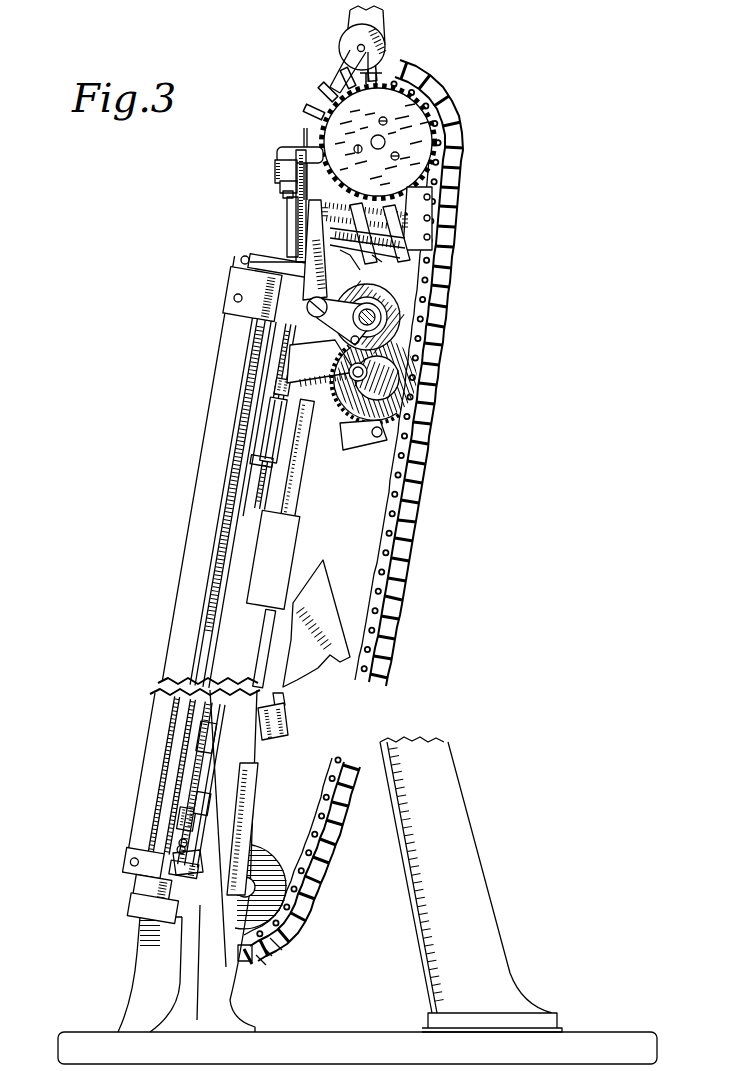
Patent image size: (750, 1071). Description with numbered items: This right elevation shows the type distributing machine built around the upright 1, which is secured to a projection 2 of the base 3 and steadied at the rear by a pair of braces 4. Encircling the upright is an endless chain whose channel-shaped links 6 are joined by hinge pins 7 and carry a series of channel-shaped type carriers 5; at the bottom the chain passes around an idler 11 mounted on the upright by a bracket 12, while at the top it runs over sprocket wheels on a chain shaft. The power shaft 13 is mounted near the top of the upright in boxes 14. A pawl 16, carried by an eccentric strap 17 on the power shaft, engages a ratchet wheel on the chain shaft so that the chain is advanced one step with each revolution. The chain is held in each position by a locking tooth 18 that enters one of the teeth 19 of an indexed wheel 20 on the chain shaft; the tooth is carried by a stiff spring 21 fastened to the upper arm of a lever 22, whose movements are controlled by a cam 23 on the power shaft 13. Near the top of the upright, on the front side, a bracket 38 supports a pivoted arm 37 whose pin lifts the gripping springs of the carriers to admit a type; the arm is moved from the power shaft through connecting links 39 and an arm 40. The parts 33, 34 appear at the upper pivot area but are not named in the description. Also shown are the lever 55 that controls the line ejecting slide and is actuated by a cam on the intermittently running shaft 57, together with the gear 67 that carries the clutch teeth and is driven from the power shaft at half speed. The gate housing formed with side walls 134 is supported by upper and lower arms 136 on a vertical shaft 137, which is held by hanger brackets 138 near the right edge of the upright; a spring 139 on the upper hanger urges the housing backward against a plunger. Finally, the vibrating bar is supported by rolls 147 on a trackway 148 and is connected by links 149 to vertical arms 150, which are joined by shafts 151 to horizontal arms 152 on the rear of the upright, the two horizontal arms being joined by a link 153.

The upright 1 is at (235, 762).
The projection 2 is at (228, 967).
The base 3 is at (323, 1043).
The braces 4 is at (470, 873).
The type carriers 5 is at (342, 823).
The chain links 6 is at (322, 808).
The hinge pins 7 is at (333, 783).
The idler 11 is at (282, 843).
The bracket 12 is at (257, 790).
The power shaft 13 is at (380, 318).
The boxes 14 is at (321, 361).
The pawl 16 is at (432, 210).
The eccentric strap 17 is at (432, 248).
The locking tooth 18 is at (305, 147).
The teeth 19 is at (440, 113).
The indexed wheel 20 is at (427, 130).
The stiff spring 21 is at (282, 162).
The lever 22 is at (317, 278).
The cam 23 is at (399, 308).
The pivot 33 is at (383, 52).
The link 34 is at (362, 66).
The arm 37 is at (282, 185).
The bracket 38 is at (277, 168).
The connecting links 39 is at (283, 193).
The arm 40 is at (293, 208).
The lever 55 is at (405, 356).
The intermittently running shaft 57 is at (397, 383).
The gear 67 is at (395, 416).
The side walls 134 is at (198, 523).
The upper and lower arms 136 is at (238, 275).
The vertical shaft 137 is at (185, 704).
The hanger brackets 138 is at (250, 247).
The spring 139 is at (240, 257).
The rolls 147 is at (197, 877).
The trackway 148 is at (200, 933).
The links 149 is at (263, 433).
The vertical arms 150 is at (267, 388).
The shafts 151 is at (262, 733).
The horizontal arms 152 is at (277, 713).
The link 153 is at (315, 493).